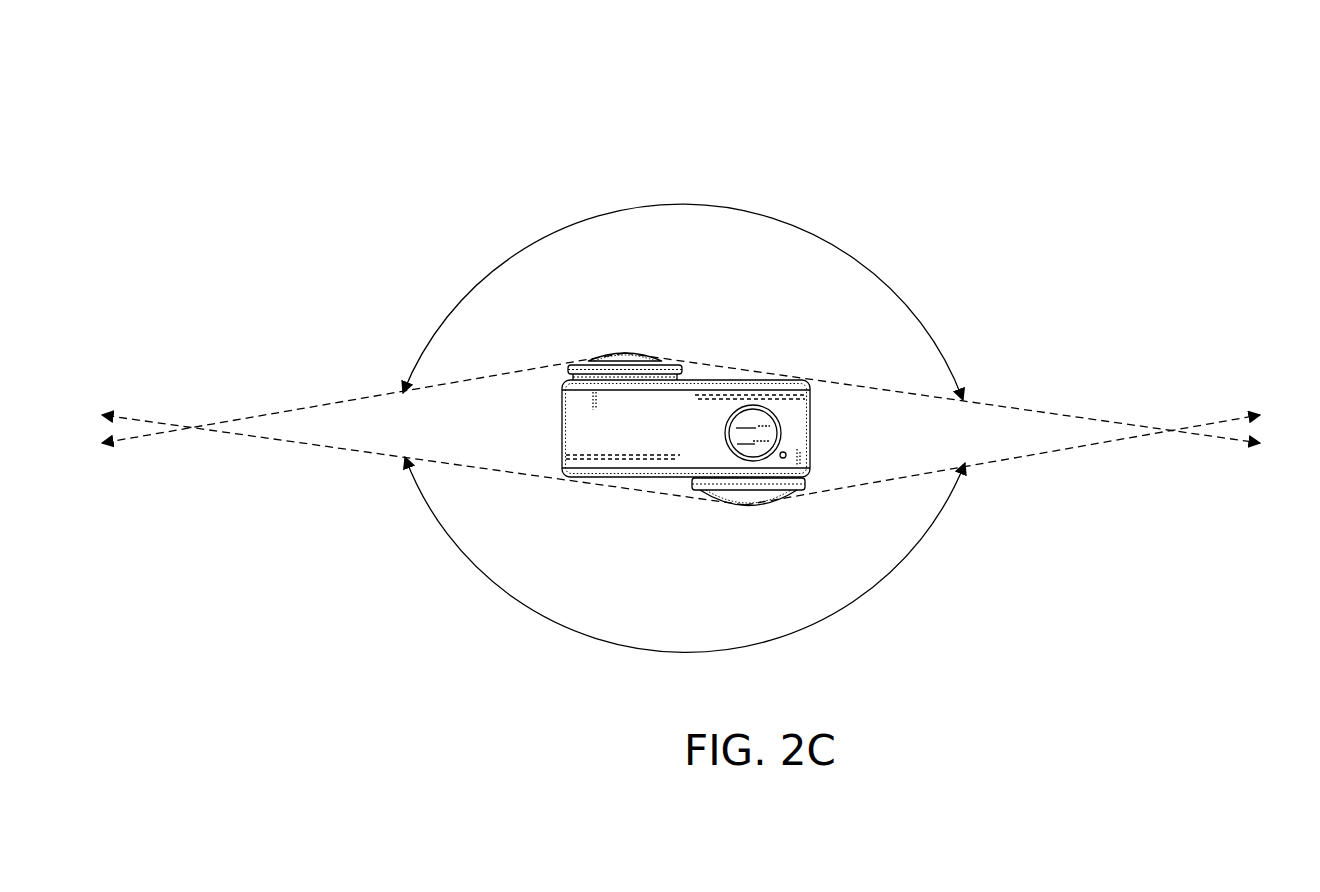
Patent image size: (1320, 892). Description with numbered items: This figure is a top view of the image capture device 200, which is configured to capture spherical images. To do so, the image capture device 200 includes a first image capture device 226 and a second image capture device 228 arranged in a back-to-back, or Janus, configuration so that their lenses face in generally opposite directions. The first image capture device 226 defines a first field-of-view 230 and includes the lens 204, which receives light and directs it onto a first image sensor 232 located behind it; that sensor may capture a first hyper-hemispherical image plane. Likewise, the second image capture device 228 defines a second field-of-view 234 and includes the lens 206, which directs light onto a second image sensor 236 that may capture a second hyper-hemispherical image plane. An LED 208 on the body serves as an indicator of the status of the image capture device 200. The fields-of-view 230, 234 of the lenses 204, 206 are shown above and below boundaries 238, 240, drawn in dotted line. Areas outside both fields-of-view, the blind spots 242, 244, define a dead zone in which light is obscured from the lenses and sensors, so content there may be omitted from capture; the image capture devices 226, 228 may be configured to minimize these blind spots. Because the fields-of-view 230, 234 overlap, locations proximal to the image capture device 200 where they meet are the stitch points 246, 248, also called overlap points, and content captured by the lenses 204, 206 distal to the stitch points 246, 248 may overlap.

The image capture device 200 is at (1178, 160).
The lens 204 is at (645, 360).
The lens 206 is at (723, 497).
The LED 208 is at (783, 458).
The first image capture device 226 is at (622, 350).
The second image capture device 228 is at (760, 507).
The first field-of-view 230 is at (797, 228).
The first image sensor 232 is at (597, 462).
The second field-of-view 234 is at (617, 647).
The second image sensor 236 is at (773, 398).
The boundary 238 is at (1118, 421).
The boundary 240 is at (1078, 447).
The blind spot 242 is at (480, 442).
The blind spot 244 is at (873, 449).
The stitch point 246 is at (195, 430).
The stitch point 248 is at (1168, 430).